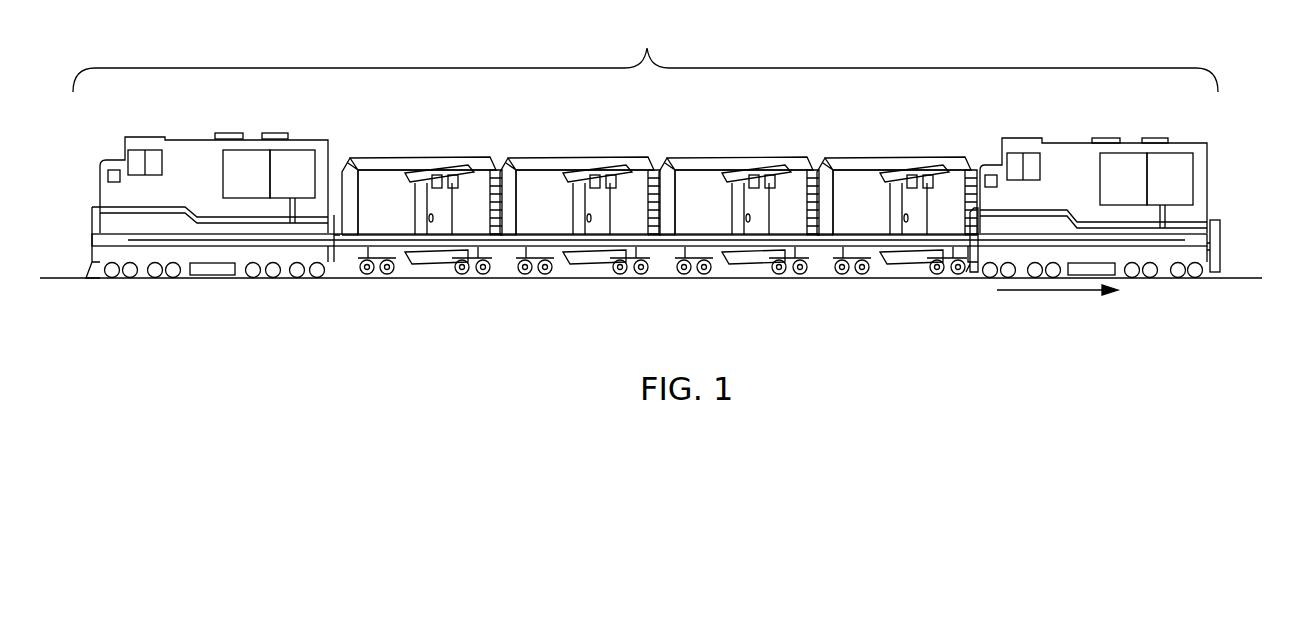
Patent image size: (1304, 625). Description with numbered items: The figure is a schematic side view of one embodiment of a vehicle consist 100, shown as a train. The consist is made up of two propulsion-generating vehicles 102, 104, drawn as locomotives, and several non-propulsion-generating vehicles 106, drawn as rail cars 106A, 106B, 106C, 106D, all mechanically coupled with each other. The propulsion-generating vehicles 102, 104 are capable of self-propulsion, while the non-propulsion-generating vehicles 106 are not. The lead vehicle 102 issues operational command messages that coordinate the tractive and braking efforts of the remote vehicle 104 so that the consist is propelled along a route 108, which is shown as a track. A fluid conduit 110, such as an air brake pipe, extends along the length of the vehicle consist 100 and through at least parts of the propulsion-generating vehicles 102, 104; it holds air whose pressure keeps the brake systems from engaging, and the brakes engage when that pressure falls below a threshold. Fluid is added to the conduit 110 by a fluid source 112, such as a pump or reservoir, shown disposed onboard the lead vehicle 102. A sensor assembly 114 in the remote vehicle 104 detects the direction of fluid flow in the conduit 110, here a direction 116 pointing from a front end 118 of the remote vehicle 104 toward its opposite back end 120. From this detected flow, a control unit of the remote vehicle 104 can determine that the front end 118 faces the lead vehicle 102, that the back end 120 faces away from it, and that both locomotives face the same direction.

The vehicle consist 100 is at (645, 57).
The propulsion-generating vehicle 102 is at (213, 183).
The propulsion-generating vehicle 104 is at (1141, 186).
The non-propulsion-generating vehicles 106 is at (378, 152).
The non-propulsion-generating vehicle 106A is at (422, 188).
The non-propulsion-generating vehicle 106B is at (580, 188).
The non-propulsion-generating vehicle 106C is at (739, 188).
The non-propulsion-generating vehicle 106D is at (897, 188).
The route 108 is at (1243, 283).
The fluid conduit 110 is at (400, 247).
The fluid source 112 is at (300, 150).
The sensor assembly 114 is at (1178, 153).
The direction 116 is at (1047, 297).
The front end 118 is at (976, 171).
The back end 120 is at (1213, 166).